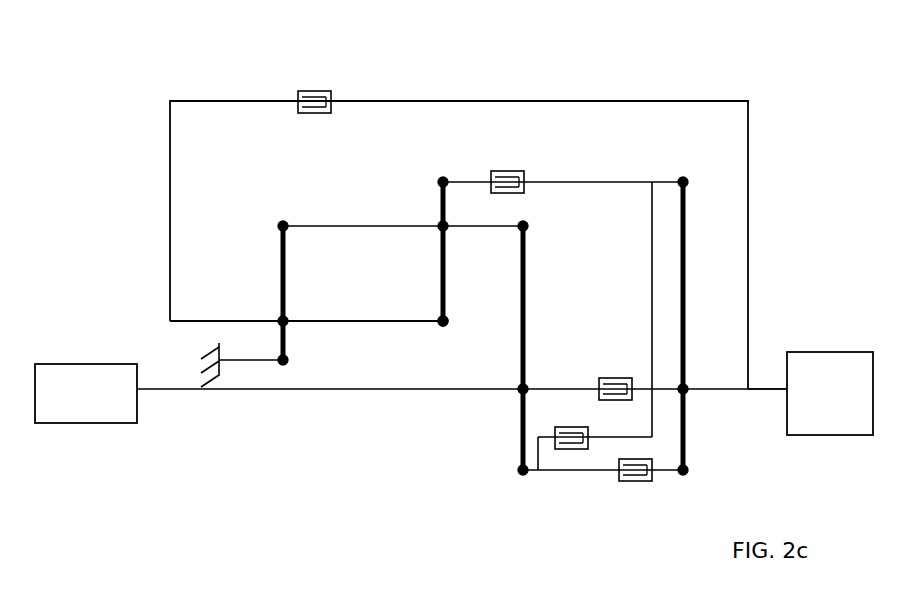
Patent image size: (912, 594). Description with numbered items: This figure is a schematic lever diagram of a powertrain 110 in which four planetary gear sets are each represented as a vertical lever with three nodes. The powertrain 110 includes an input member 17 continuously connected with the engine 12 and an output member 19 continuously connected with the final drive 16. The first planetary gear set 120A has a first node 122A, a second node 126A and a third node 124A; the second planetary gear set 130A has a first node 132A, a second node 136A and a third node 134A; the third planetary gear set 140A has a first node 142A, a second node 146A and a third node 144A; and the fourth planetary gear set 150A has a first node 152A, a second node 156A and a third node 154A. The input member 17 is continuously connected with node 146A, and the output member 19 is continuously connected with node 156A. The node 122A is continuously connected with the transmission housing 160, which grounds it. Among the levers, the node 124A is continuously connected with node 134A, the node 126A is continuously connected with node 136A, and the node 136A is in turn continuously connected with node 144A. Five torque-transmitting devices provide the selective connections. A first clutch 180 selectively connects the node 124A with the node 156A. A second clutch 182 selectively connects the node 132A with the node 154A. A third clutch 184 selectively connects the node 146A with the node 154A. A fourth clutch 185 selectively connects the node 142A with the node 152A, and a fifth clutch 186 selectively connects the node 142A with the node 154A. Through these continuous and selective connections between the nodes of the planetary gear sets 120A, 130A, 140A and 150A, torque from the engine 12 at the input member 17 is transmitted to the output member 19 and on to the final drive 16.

The engine 12 is at (97, 360).
The final drive 16 is at (836, 345).
The input member 17 is at (163, 392).
The output member 19 is at (758, 393).
The powertrain 110 is at (234, 71).
The transmission housing 160 is at (205, 365).
The clutch 180 is at (325, 77).
The clutch 182 is at (509, 167).
The clutch 184 is at (615, 374).
The clutch 185 is at (628, 491).
The clutch 186 is at (566, 421).
The first planetary gear set 120A is at (289, 214).
The first node 122A is at (288, 362).
The third node 124A is at (280, 320).
The second node 126A is at (278, 220).
The second planetary gear set 130A is at (443, 169).
The first node 132A is at (438, 181).
The third node 134A is at (440, 320).
The second node 136A is at (438, 224).
The third planetary gear set 140A is at (523, 487).
The first node 142A is at (518, 470).
The third node 144A is at (527, 228).
The second node 146A is at (467, 324).
The fourth planetary gear set 150A is at (684, 169).
The first node 152A is at (688, 468).
The third node 154A is at (688, 185).
The second node 156A is at (688, 388).